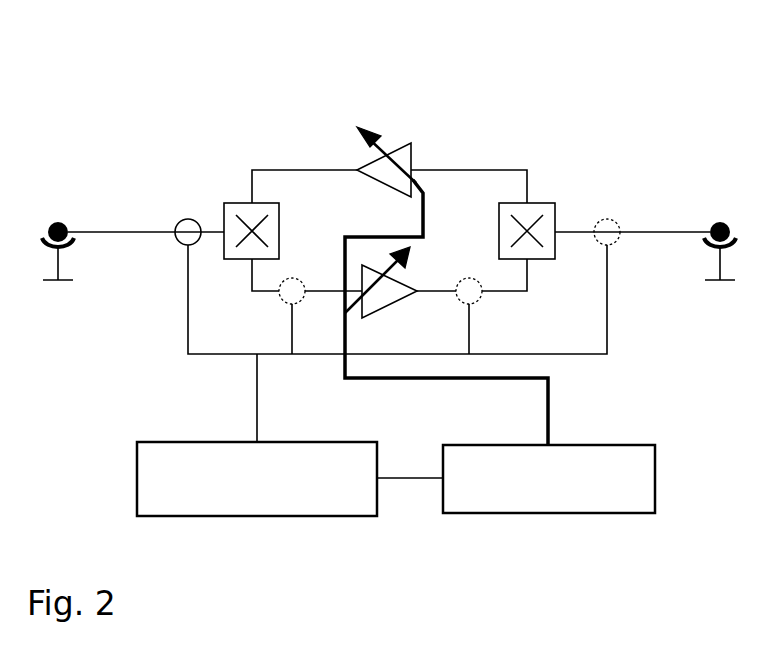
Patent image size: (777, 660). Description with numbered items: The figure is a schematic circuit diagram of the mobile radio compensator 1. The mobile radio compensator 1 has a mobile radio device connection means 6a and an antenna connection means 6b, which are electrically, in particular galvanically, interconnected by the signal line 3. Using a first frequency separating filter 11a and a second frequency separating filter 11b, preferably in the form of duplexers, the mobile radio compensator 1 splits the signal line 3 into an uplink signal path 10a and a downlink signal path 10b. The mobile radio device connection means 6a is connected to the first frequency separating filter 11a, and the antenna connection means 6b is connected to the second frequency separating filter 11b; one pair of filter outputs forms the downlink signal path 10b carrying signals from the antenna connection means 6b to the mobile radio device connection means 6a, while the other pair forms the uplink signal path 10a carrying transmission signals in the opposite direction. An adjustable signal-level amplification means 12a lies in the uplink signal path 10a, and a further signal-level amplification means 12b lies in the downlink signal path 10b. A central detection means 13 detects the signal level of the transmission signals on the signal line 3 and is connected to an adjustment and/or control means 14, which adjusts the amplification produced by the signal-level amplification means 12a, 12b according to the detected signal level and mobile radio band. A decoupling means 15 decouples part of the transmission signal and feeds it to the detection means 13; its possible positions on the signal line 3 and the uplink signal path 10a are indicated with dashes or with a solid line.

The mobile radio compensator 1 is at (90, 101).
The signal line 3 is at (135, 233).
The mobile radio device connection means 6a is at (58, 221).
The antenna connection means 6b is at (722, 221).
The uplink signal path 10a is at (520, 291).
The downlink signal path 10b is at (306, 170).
The first frequency separating filter 11a is at (228, 203).
The second frequency separating filter 11b is at (549, 203).
The adjustable signal-level amplification means 12a is at (383, 308).
The further signal-level amplification means 12b is at (403, 143).
The detection means 13 is at (182, 442).
The adjustment and/or control means 14 is at (638, 445).
The decoupling means 15 is at (187, 219).